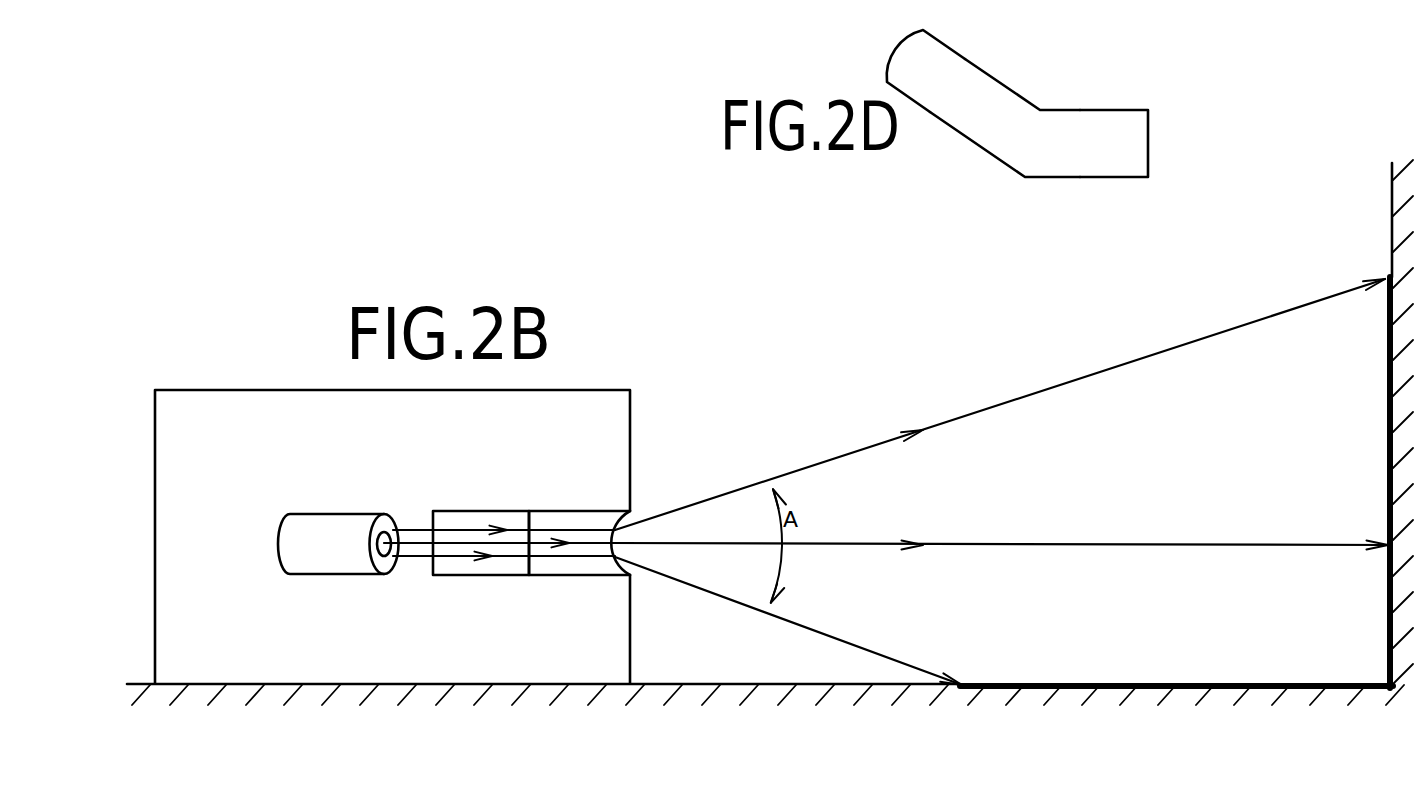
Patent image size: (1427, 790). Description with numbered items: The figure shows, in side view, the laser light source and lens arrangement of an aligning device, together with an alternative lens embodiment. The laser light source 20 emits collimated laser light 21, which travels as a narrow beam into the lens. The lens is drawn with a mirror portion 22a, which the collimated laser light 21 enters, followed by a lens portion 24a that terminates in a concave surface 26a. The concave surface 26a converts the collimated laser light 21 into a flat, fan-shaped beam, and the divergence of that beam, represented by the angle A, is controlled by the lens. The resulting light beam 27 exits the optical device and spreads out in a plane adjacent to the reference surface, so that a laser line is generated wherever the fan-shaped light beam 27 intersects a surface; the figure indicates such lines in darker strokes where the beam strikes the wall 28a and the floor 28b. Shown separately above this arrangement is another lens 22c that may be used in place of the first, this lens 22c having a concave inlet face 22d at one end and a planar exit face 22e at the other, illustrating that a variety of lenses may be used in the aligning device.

In FIG. 2B, the laser light source 20 is at (327, 514).
In FIG. 2B, the collimated laser light 21 is at (412, 557).
In FIG. 2B, the mirror portion 22a is at (454, 511).
In FIG. 2B, the lens portion 24a is at (568, 511).
In FIG. 2B, the concave surface 26a is at (628, 517).
In FIG. 2B, the light beam 27 is at (828, 461).
In FIG. 2B, the wall 28a is at (1387, 395).
In FIG. 2B, the floor 28b is at (1215, 685).
In FIG. 2D, the lens 22c is at (1028, 101).
In FIG. 2D, the concave inlet face 22d is at (907, 40).
In FIG. 2D, the planar exit face 22e is at (1148, 152).